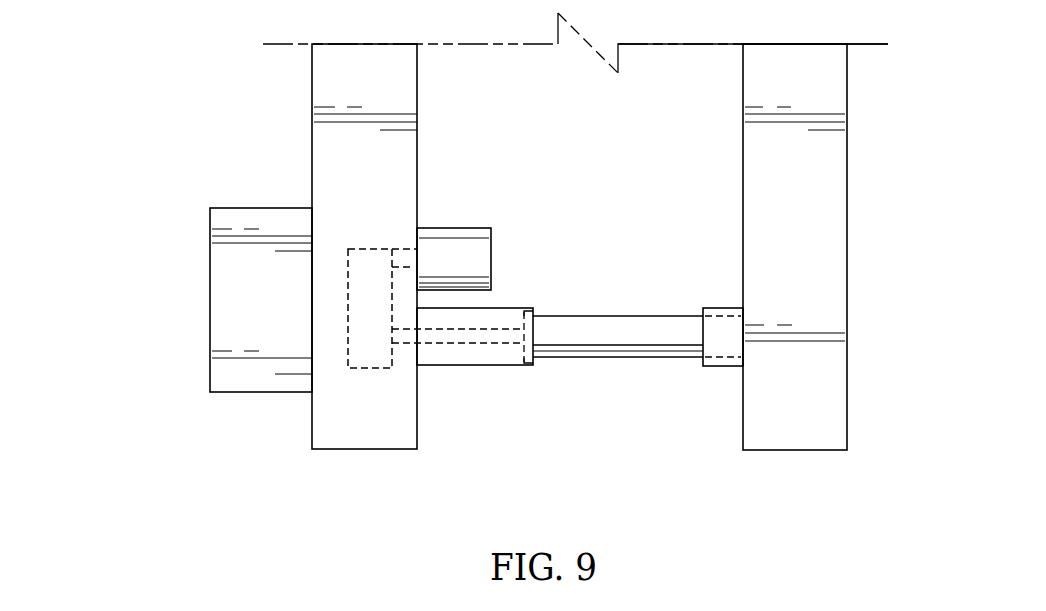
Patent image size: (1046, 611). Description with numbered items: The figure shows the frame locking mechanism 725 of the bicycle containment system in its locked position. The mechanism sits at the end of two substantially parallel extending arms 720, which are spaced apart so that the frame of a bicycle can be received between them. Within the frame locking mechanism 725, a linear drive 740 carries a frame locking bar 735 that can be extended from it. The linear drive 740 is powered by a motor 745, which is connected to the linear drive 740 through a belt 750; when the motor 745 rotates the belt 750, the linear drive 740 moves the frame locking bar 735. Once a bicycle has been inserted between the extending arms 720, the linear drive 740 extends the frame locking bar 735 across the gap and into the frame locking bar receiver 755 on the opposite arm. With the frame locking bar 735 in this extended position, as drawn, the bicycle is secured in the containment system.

The frame locking mechanism 725 is at (229, 115).
The extending arms 720 is at (323, 152).
The motor 745 is at (462, 235).
The linear drive 740 is at (467, 348).
The frame locking bar 735 is at (620, 325).
The frame locking bar receiver 755 is at (720, 352).
The belt 750 is at (372, 368).